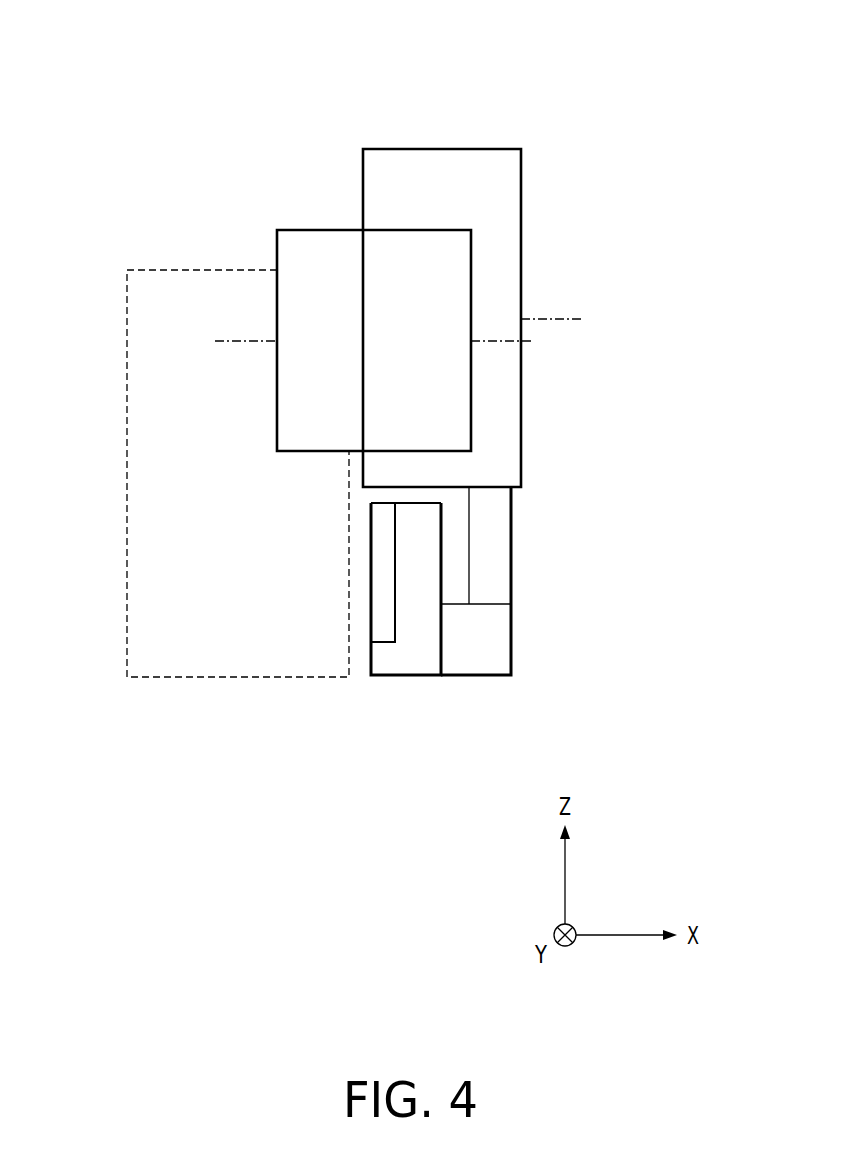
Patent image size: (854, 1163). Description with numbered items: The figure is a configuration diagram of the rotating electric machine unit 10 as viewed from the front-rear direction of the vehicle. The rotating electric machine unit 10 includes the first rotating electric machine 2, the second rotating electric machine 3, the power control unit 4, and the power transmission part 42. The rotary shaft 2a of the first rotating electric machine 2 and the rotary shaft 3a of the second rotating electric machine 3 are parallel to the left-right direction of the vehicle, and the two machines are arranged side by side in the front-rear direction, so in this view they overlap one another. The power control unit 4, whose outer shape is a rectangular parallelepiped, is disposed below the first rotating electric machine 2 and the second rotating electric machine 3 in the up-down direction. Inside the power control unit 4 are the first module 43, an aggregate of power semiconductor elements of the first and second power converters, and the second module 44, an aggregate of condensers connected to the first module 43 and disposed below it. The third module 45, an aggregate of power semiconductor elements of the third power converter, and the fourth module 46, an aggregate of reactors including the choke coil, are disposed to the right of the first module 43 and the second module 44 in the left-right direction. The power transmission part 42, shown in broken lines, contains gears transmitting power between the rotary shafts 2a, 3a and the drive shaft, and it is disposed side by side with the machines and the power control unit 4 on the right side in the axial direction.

The rotating electric machine unit 10 is at (398, 384).
The first rotating electric machine 2 is at (473, 148).
The rotary shaft 2a is at (560, 313).
The second rotating electric machine 3 is at (322, 228).
The rotary shaft 3a is at (235, 338).
The power control unit 4 is at (520, 580).
The power transmission part 42 is at (135, 268).
The first module 43 is at (502, 568).
The second module 44 is at (502, 638).
The third module 45 is at (410, 668).
The fourth module 46 is at (377, 625).